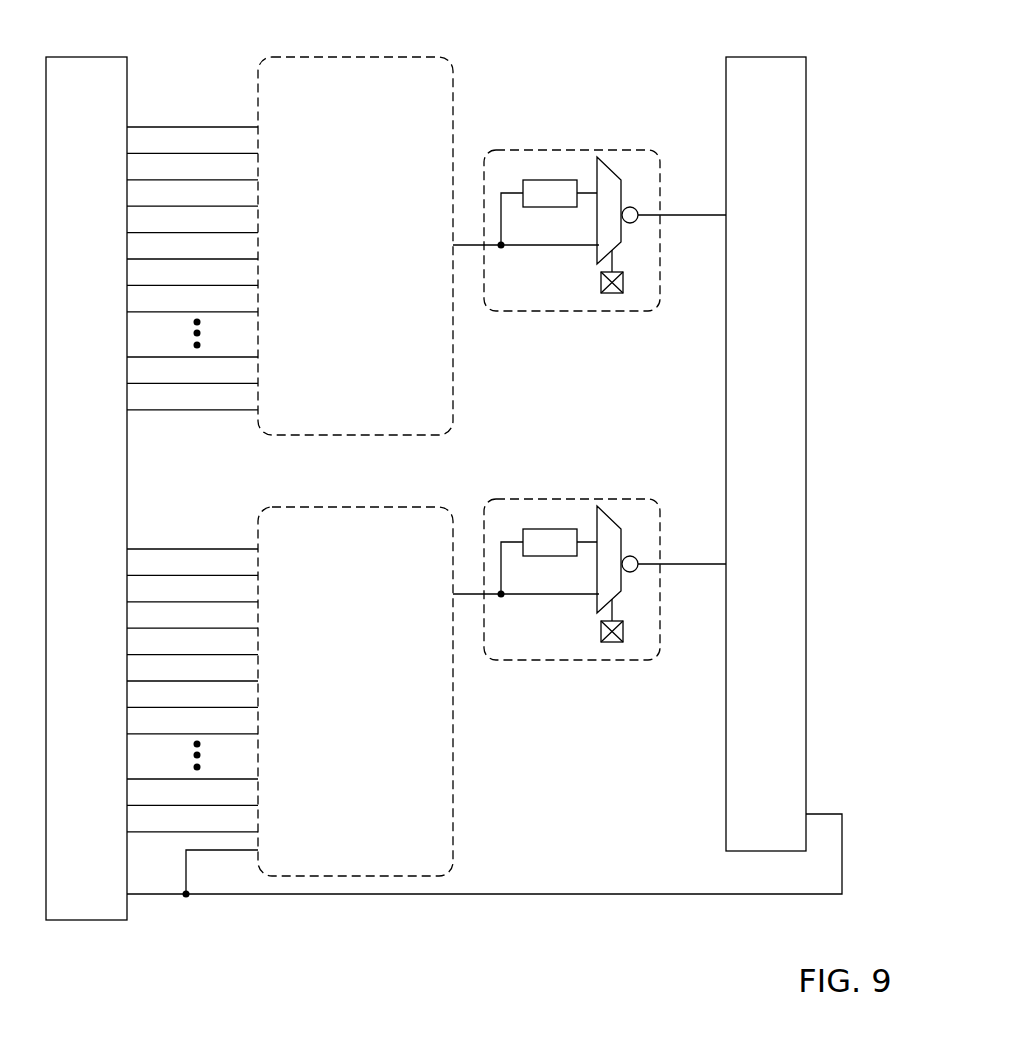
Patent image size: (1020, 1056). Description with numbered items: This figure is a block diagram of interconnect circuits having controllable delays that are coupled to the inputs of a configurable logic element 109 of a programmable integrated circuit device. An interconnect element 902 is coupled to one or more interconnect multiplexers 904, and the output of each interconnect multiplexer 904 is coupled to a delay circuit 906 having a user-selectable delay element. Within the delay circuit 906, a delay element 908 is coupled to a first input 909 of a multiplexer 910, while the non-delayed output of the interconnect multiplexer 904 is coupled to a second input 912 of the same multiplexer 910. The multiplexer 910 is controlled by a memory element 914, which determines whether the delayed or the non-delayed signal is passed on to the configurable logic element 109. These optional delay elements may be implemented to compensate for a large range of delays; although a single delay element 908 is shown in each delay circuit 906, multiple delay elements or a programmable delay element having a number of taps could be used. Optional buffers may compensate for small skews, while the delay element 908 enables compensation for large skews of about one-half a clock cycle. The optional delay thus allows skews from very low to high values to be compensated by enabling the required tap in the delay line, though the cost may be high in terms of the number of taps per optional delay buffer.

The interconnect element 902 is at (93, 57).
The interconnect multiplexer 904 is at (345, 57).
The configurable logic element 109 is at (755, 57).
The delay circuit 906 is at (603, 149).
The delay element 908 is at (563, 208).
The first input 909 is at (593, 190).
The multiplexer 910 is at (621, 243).
The second input 912 is at (598, 252).
The memory element 914 is at (603, 294).